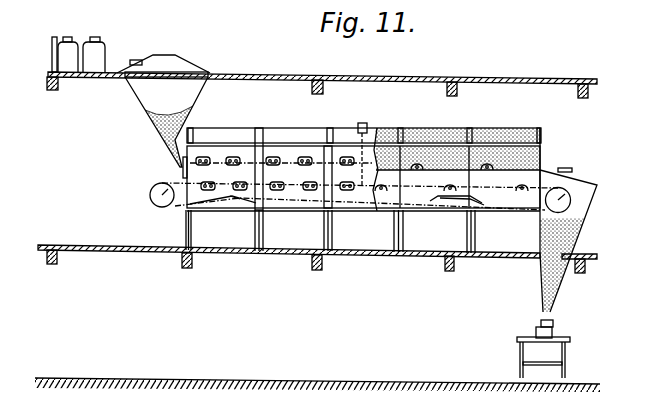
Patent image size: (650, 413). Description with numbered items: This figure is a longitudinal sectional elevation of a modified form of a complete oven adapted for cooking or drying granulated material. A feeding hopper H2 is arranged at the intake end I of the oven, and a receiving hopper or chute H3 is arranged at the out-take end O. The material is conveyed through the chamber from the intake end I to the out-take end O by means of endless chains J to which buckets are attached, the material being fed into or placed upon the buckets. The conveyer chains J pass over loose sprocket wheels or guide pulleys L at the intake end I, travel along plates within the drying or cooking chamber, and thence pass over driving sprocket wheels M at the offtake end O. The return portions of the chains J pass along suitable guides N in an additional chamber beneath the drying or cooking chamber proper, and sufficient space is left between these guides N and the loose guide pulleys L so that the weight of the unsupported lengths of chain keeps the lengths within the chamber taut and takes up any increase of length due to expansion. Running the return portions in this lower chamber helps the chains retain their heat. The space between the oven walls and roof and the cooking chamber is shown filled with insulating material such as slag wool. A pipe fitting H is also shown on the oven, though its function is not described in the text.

The feeding hopper H2 is at (145, 92).
The intake end I is at (157, 163).
The loose sprocket wheels or guide pulleys L is at (154, 202).
The guides N is at (243, 204).
The pipe valve H is at (368, 125).
The endless chains J is at (428, 205).
The out-take end O is at (569, 143).
The receiving hopper or chute H3 is at (582, 191).
The driving sprocket wheels M is at (558, 198).